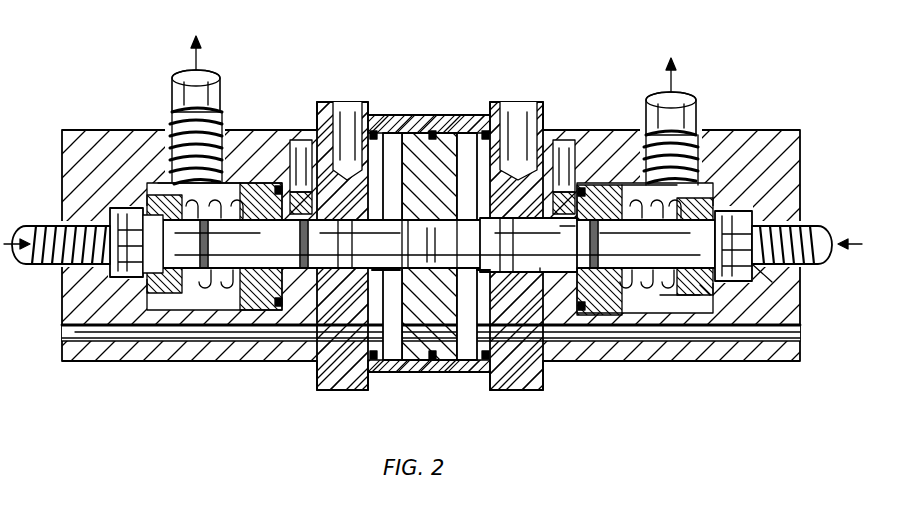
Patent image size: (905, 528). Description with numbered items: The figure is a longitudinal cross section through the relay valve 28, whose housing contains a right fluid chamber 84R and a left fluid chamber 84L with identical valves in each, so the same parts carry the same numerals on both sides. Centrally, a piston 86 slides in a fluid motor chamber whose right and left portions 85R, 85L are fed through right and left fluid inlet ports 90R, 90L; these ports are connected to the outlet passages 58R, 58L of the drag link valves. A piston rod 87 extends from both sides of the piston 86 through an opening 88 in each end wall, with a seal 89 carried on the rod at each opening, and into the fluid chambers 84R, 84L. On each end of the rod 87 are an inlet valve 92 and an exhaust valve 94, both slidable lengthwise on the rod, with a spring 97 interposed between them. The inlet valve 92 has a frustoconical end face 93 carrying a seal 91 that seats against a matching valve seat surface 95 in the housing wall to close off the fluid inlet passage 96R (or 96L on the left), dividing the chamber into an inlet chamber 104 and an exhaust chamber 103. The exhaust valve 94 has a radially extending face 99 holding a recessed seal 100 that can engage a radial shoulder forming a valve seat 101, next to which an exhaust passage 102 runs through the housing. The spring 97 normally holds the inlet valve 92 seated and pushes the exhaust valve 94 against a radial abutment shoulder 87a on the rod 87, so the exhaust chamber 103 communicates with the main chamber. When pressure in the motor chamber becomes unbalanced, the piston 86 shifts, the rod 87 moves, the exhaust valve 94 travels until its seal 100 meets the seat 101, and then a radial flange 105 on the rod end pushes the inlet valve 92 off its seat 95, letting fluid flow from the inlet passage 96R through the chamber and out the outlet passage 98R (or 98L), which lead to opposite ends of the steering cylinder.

The relay valve 28 is at (440, 66).
The left outlet passage of drag link valve 58L is at (335, 228).
The right outlet passage of drag link valve 58R is at (524, 228).
The left fluid chamber 84L is at (414, 205).
The right fluid chamber 84R is at (677, 210).
The left fluid motor chamber portion 85L is at (392, 132).
The right fluid motor chamber portion 85R is at (470, 132).
The piston 86 is at (428, 140).
The piston rod 87 is at (525, 220).
The radial abutment shoulder 87a is at (620, 290).
The opening 88 is at (534, 272).
The seal 89 is at (417, 286).
The left fluid inlet port 90L is at (378, 153).
The right fluid inlet port 90R is at (488, 157).
The seal 91 is at (700, 216).
The inlet valve 92 is at (682, 292).
The end face 93 is at (695, 198).
The exhaust valve 94 is at (603, 312).
The valve seat surface 95 is at (712, 282).
The left fluid inlet passage 96L is at (44, 224).
The right fluid inlet passage 96R is at (788, 249).
The spring 97 is at (655, 210).
The left outlet passage 98L is at (176, 114).
The right outlet passage 98R is at (670, 90).
The radially extending face 99 is at (556, 239).
The recessed seal 100 is at (595, 198).
The valve seat 101 is at (582, 192).
The exhaust passage 102 is at (562, 140).
The exhaust chamber 103 is at (585, 275).
The inlet chamber 104 is at (742, 218).
The radial flange 105 is at (778, 272).